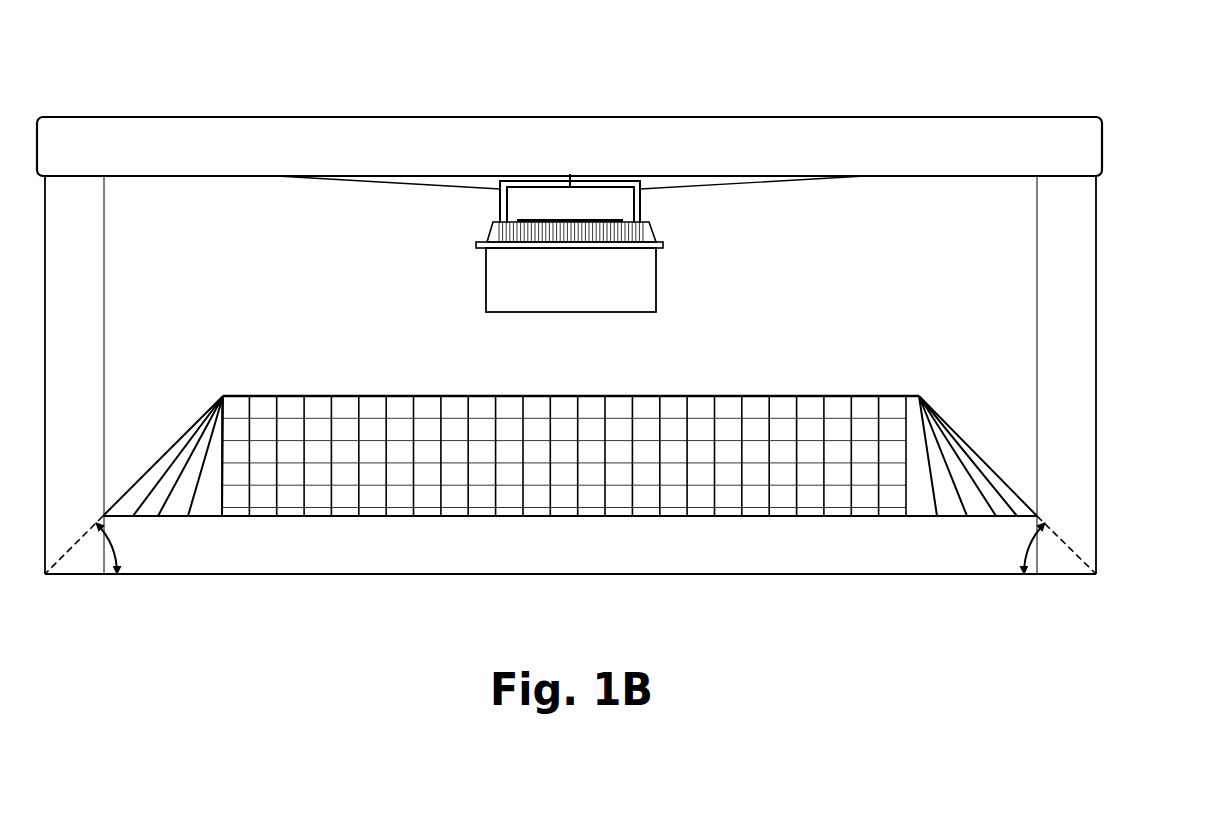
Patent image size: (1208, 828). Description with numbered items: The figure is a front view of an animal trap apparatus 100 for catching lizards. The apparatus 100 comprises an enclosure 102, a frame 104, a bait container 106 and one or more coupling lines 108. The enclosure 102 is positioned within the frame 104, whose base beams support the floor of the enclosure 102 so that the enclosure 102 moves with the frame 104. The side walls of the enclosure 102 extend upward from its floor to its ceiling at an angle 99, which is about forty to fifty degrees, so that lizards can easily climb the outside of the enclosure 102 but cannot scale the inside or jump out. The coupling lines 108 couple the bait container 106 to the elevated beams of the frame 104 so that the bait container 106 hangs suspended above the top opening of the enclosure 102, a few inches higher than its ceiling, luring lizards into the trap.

The animal trap apparatus 100 is at (1188, 46).
The enclosure 102 is at (955, 420).
The frame 104 is at (1080, 290).
The bait container 106 is at (656, 278).
The coupling lines 108 is at (417, 188).
The angle 99 is at (143, 533).